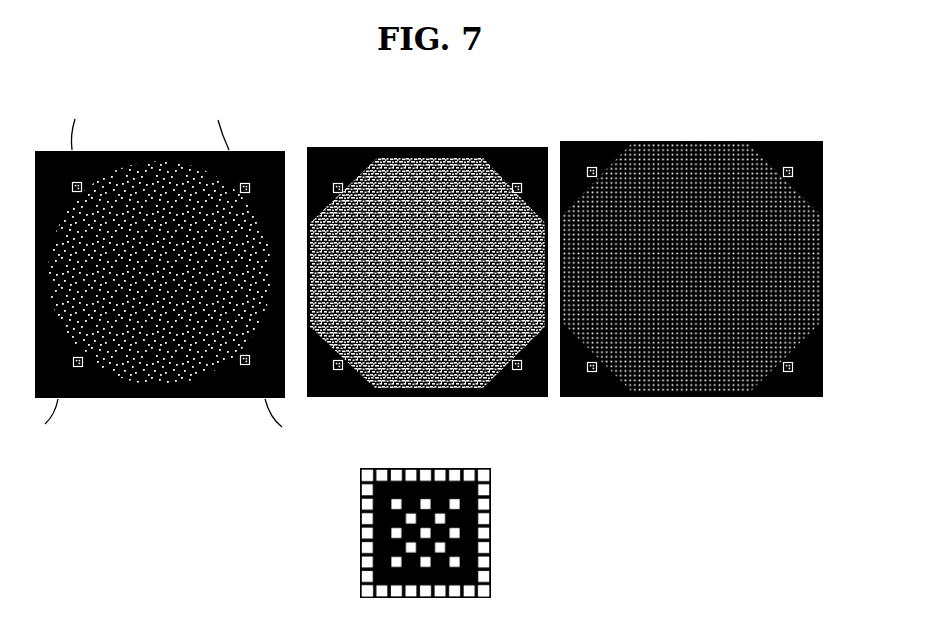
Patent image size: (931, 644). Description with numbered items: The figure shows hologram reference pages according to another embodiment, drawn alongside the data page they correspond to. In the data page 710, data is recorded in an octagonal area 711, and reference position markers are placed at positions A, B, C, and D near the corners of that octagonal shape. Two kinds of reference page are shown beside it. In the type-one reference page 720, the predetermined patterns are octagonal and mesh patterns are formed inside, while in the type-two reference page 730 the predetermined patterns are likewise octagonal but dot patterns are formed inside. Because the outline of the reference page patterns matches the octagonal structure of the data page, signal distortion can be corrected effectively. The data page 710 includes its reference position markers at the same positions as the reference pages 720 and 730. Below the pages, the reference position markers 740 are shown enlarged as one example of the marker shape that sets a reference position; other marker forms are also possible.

The data page 710 is at (266, 150).
The data area of data page 711 is at (156, 150).
The type-1 reference page 720 is at (524, 147).
The type-2 reference page 730 is at (804, 141).
The reference position markers 740 is at (492, 532).